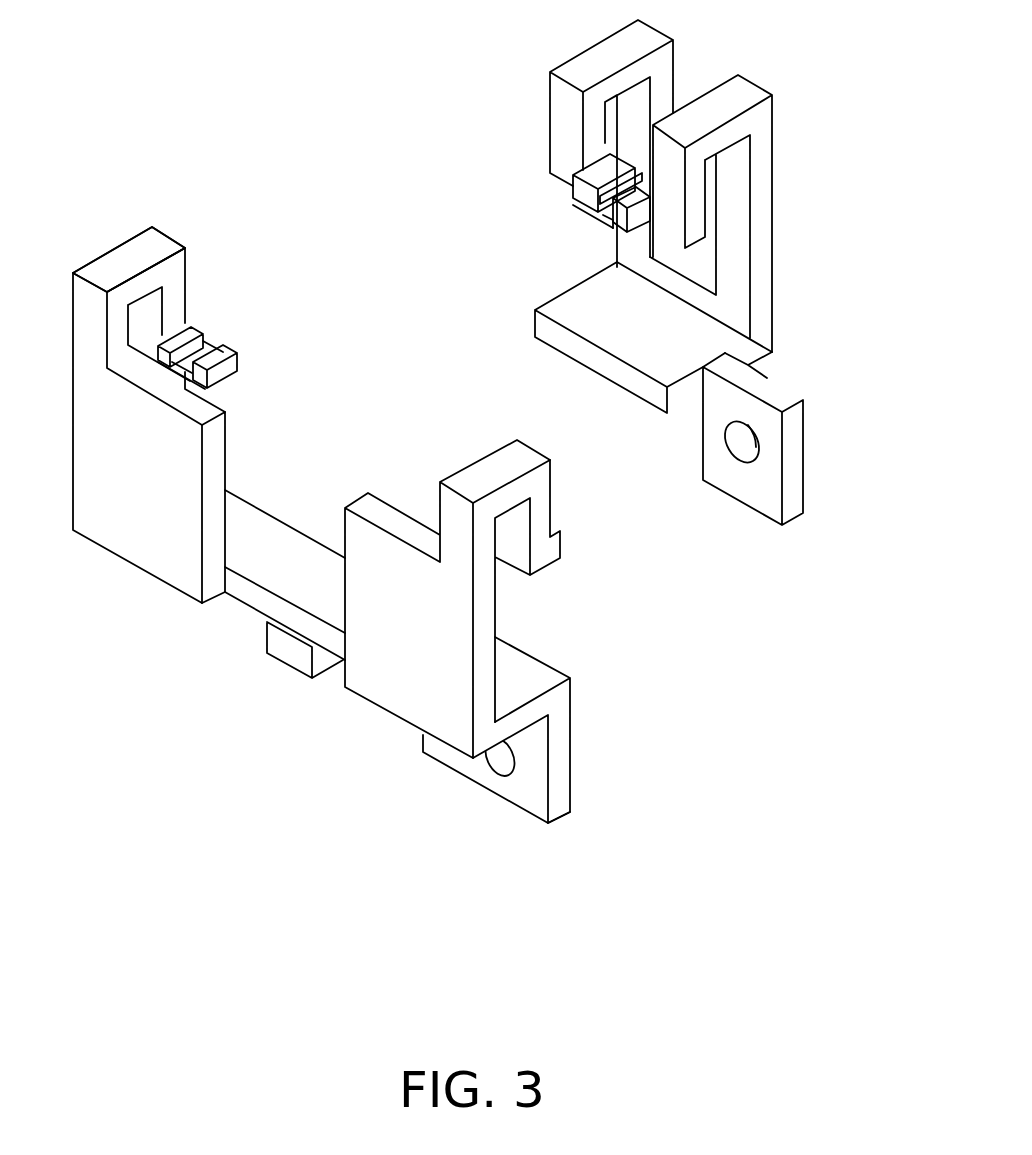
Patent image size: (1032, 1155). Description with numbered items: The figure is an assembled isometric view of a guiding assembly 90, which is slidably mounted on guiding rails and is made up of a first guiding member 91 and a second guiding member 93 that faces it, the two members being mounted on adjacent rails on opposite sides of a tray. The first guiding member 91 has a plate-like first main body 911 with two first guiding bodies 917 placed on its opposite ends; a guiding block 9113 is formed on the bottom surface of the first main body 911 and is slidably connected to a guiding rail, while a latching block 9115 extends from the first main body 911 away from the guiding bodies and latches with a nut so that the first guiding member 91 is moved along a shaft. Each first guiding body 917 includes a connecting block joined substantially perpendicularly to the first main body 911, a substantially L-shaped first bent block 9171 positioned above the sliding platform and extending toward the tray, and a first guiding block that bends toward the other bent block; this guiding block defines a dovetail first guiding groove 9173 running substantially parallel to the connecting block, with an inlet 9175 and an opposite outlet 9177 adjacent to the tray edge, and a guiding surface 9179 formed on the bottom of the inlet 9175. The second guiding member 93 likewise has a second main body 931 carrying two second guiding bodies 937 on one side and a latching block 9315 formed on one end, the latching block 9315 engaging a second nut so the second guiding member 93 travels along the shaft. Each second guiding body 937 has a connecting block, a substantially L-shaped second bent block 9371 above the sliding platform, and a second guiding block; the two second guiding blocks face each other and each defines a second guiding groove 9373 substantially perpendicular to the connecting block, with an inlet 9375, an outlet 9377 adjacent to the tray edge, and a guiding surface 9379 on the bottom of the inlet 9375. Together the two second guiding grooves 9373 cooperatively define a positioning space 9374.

The guiding assembly 90 is at (308, 52).
The first guiding member 91 is at (321, 562).
The first main body 911 is at (257, 593).
The guiding block 9113 is at (298, 658).
The latching block 9115 is at (530, 790).
The first guiding body 917 is at (251, 438).
The first bent block 9171 is at (293, 322).
The first guiding groove 9173 is at (293, 305).
The inlet 9175 is at (215, 340).
The outlet 9177 is at (212, 353).
The guiding surface 9179 is at (208, 328).
The second guiding member 93 is at (637, 332).
The second main body 931 is at (692, 453).
The latching block 9315 is at (760, 493).
The second guiding body 937 is at (740, 245).
The second bent block 9371 is at (507, 209).
The second guiding groove 9373 is at (503, 161).
The positioning space 9374 is at (625, 222).
The inlet 9375 is at (580, 195).
The outlet 9377 is at (630, 165).
The guiding surface 9379 is at (613, 216).